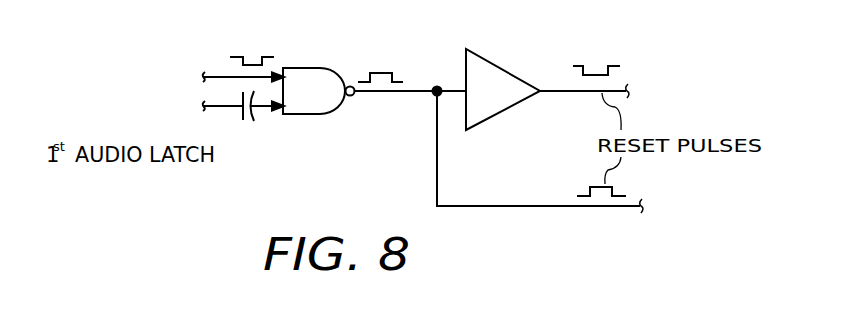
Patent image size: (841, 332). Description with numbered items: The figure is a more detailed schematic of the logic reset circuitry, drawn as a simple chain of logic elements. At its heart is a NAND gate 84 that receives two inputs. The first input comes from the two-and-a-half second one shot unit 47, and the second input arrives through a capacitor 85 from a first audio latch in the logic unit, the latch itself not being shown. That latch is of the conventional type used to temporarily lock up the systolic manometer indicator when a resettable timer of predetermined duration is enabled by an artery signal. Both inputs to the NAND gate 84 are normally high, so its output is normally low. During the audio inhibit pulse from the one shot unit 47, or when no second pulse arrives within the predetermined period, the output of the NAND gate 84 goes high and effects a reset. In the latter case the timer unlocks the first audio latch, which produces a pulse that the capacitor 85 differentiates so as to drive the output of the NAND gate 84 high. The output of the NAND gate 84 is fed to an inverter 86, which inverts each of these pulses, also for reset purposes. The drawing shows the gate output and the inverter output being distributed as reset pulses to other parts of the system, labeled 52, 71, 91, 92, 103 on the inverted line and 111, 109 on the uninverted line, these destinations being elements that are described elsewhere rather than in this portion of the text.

The 2.5 second one shot unit 47 is at (228, 71).
The NAND gate 84 is at (322, 103).
The capacitor 85 is at (244, 120).
The inverter 86 is at (511, 74).
The reset pulse output line 52 is at (676, 83).
The reset pulse output line 71 is at (676, 83).
The reset pulse output line 91 is at (676, 83).
The reset pulse output line 92 is at (676, 83).
The reset pulse output line 103 is at (676, 83).
The reset pulse output line 111 is at (588, 154).
The reset pulse output line 109 is at (588, 154).